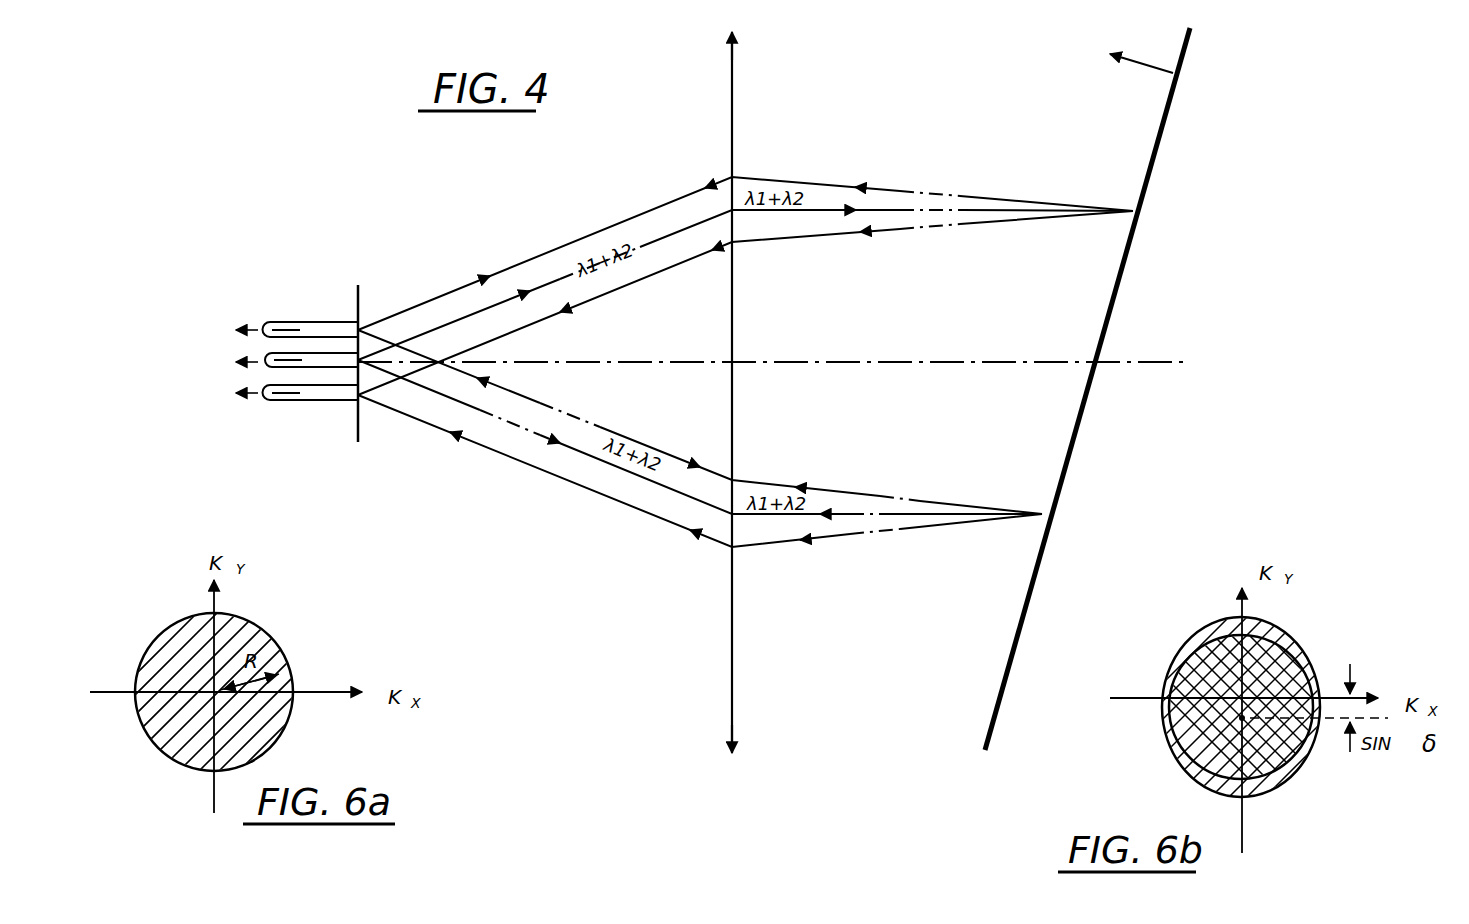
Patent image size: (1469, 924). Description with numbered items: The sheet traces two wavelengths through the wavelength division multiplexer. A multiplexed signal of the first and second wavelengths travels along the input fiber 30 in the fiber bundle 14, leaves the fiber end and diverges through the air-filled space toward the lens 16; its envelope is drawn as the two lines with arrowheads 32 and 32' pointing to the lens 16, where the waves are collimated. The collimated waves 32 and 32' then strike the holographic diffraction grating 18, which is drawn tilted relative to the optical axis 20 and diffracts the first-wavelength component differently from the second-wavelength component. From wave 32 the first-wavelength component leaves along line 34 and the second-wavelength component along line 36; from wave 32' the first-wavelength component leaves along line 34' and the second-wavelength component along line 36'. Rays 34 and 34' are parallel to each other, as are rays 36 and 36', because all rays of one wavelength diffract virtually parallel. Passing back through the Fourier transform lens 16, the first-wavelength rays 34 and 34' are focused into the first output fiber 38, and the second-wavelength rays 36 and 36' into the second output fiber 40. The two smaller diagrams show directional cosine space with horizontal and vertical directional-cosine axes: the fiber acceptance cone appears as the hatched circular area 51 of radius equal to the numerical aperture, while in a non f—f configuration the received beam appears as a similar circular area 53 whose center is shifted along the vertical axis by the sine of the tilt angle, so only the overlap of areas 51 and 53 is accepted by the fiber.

In FIG. 4, the fiber bundle 14 is at (314, 298).
In FIG. 4, the lens 16 is at (733, 90).
In FIG. 4, the holographic diffraction grating 18 is at (1172, 118).
In FIG. 4, the optical axis 20 is at (788, 362).
In FIG. 4, the input fiber 30 is at (266, 359).
In FIG. 4, the composite light wave 32 is at (745, 285).
In FIG. 4, the diffracted λ1 light ray 34 is at (745, 238).
In FIG. 4, the diffracted λ2 light ray 36 is at (745, 303).
In FIG. 4, the composite light wave 32' is at (700, 438).
In FIG. 4, the diffracted λ1 light ray 34' is at (700, 422).
In FIG. 4, the diffracted λ2 light ray 36' is at (700, 471).
In FIG. 4, the λ1 output fiber 38 is at (270, 322).
In FIG. 4, the λ2 output fiber 40 is at (297, 400).
In FIG. 6a, the circular area 51 is at (262, 632).
In FIG. 6b, the circular area 51 is at (1297, 640).
In FIG. 6b, the shifted circular area 53 is at (1287, 783).